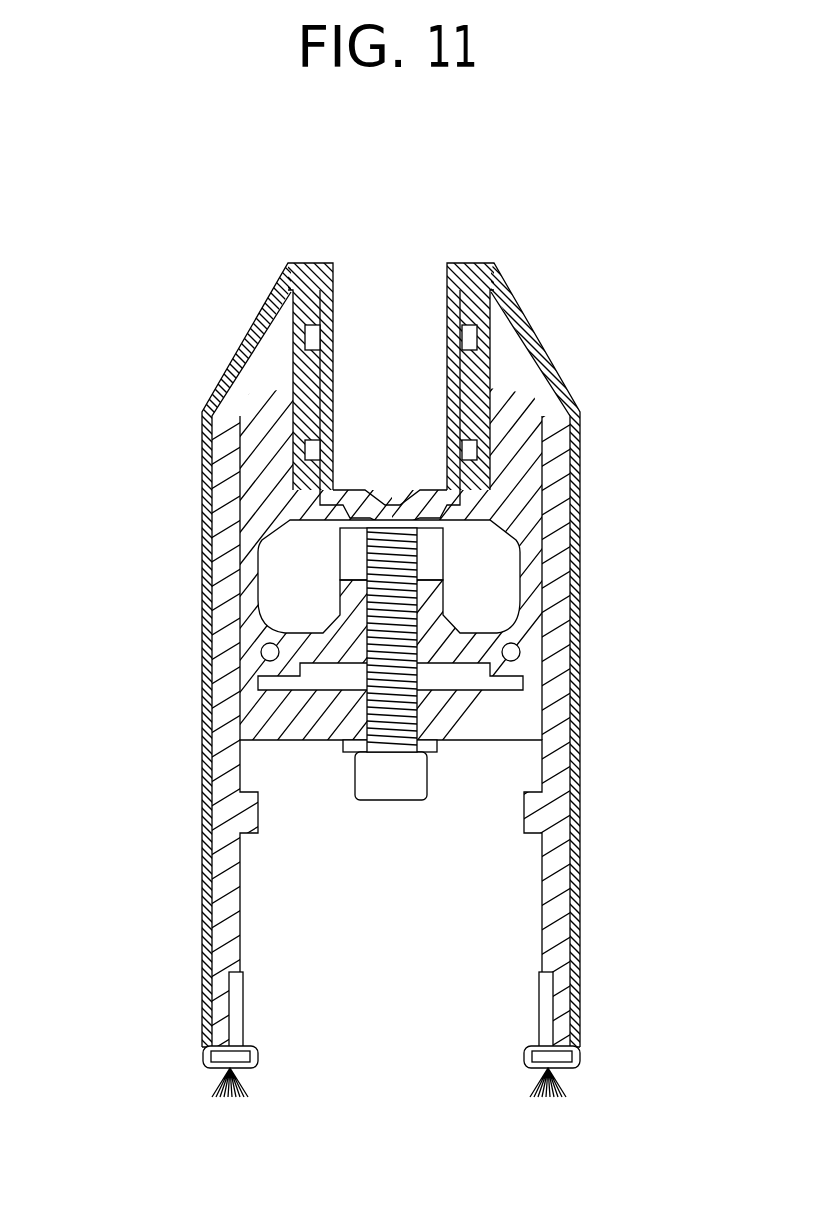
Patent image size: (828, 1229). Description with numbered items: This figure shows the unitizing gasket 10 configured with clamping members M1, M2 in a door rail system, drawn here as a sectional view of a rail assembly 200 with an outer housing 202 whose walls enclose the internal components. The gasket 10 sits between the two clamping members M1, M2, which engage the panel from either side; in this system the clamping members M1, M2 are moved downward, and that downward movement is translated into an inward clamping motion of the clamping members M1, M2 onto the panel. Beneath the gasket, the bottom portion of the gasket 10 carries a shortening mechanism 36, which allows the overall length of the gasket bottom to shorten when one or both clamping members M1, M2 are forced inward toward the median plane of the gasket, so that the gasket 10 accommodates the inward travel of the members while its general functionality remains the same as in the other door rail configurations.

The post assembly 200 is at (153, 542).
The housing 202 is at (585, 537).
The unitizing gasket 10 is at (282, 465).
The clamping member M1 is at (327, 407).
The clamping member M2 is at (520, 452).
The shortening mechanism 36 is at (412, 522).